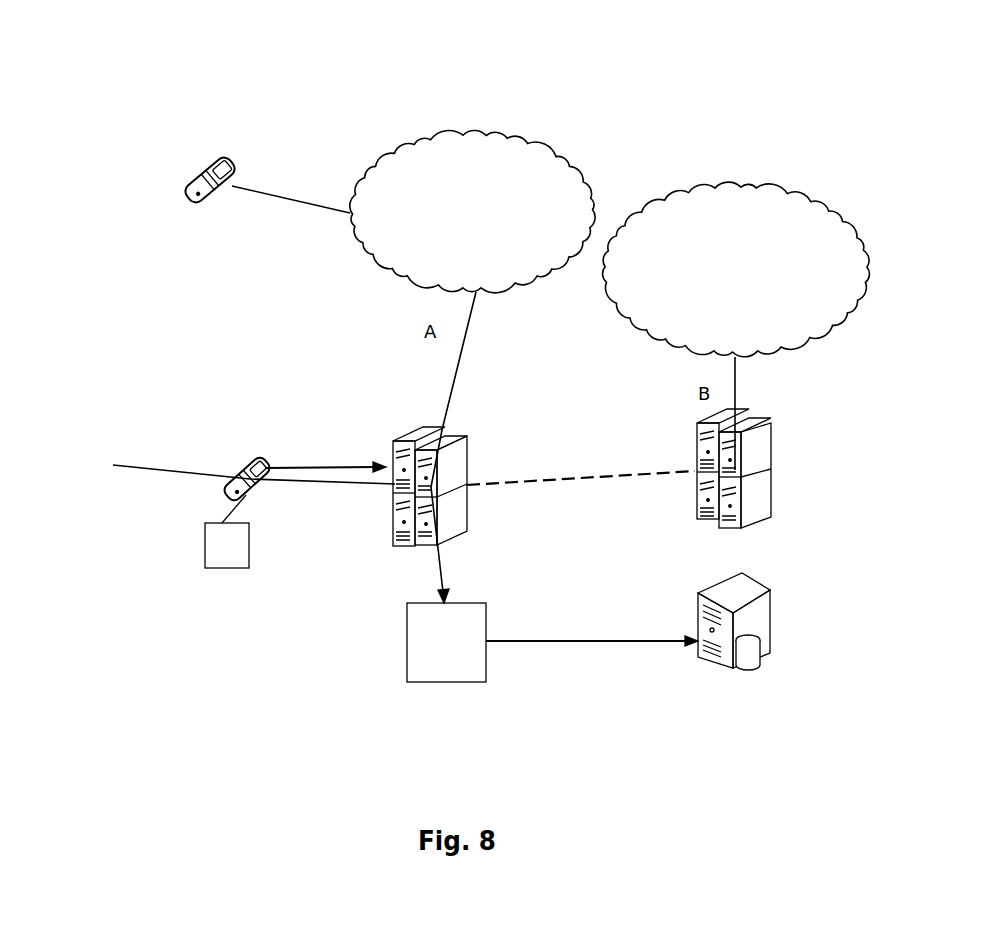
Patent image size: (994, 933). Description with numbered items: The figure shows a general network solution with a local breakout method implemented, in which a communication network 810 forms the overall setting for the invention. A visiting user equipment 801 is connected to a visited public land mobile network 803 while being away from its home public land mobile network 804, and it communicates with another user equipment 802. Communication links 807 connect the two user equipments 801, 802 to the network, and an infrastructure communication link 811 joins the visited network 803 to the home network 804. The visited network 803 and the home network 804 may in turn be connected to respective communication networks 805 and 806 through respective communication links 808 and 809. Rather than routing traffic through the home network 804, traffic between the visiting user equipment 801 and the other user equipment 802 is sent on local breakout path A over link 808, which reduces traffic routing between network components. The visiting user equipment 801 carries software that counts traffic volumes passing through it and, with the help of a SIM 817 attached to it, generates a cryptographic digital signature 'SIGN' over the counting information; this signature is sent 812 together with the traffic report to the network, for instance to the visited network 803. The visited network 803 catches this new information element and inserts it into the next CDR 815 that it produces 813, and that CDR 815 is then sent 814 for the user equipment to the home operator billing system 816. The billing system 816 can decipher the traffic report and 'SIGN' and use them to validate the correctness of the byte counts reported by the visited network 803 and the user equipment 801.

The visiting user equipment 801 is at (175, 478).
The other user equipment 802 is at (198, 178).
The visited public land mobile network (VPLMN) 803 is at (412, 545).
The home public land mobile network (HPLMN) 804 is at (697, 510).
The communication network 805 is at (460, 158).
The communication network 806 is at (745, 205).
The communication links 807 is at (320, 213).
The communication link / local breakout path A 808 is at (460, 356).
The communication link 809 is at (738, 378).
The communication network 810 is at (200, 317).
The infrastructure communication link 811 is at (594, 473).
The sending of traffic report and signature 812 is at (338, 465).
The CDR production 813 is at (443, 571).
The sending of CDR 814 is at (583, 640).
The CDR (call detail record) 815 is at (408, 663).
The home operator billing system 816 is at (703, 620).
The SIM (Subscriber Identity Module) 817 is at (205, 557).